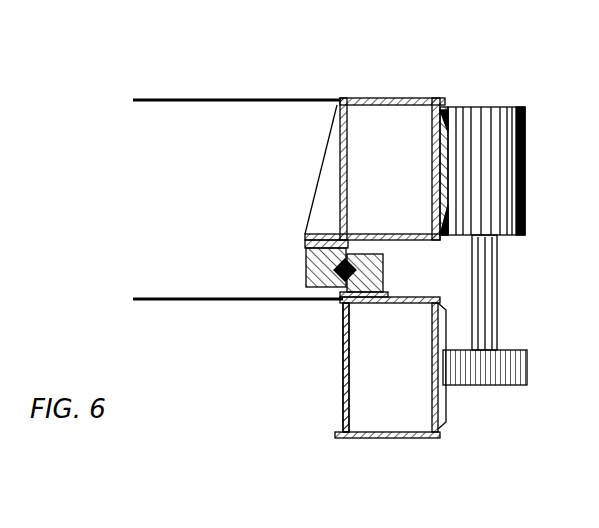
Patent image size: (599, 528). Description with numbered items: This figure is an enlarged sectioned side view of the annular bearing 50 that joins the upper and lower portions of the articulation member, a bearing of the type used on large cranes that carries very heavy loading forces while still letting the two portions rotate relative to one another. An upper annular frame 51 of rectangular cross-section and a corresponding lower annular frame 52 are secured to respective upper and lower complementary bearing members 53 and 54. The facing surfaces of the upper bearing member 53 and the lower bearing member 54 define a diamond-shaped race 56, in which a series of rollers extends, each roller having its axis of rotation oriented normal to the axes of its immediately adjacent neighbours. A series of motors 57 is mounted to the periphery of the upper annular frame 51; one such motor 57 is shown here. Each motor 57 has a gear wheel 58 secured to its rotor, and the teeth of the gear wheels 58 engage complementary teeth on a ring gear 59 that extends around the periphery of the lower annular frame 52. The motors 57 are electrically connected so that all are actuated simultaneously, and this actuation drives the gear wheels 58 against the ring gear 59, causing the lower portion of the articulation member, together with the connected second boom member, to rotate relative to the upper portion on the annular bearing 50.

The annular bearing 50 is at (398, 258).
The upper annular frame 51 is at (452, 130).
The lower annular frame 52 is at (343, 370).
The upper bearing member 53 is at (306, 248).
The lower bearing member 54 is at (370, 280).
The diamond-shaped race 56 is at (338, 264).
The motor 57 is at (500, 130).
The gear wheel 58 is at (527, 366).
The ring gear 59 is at (447, 414).